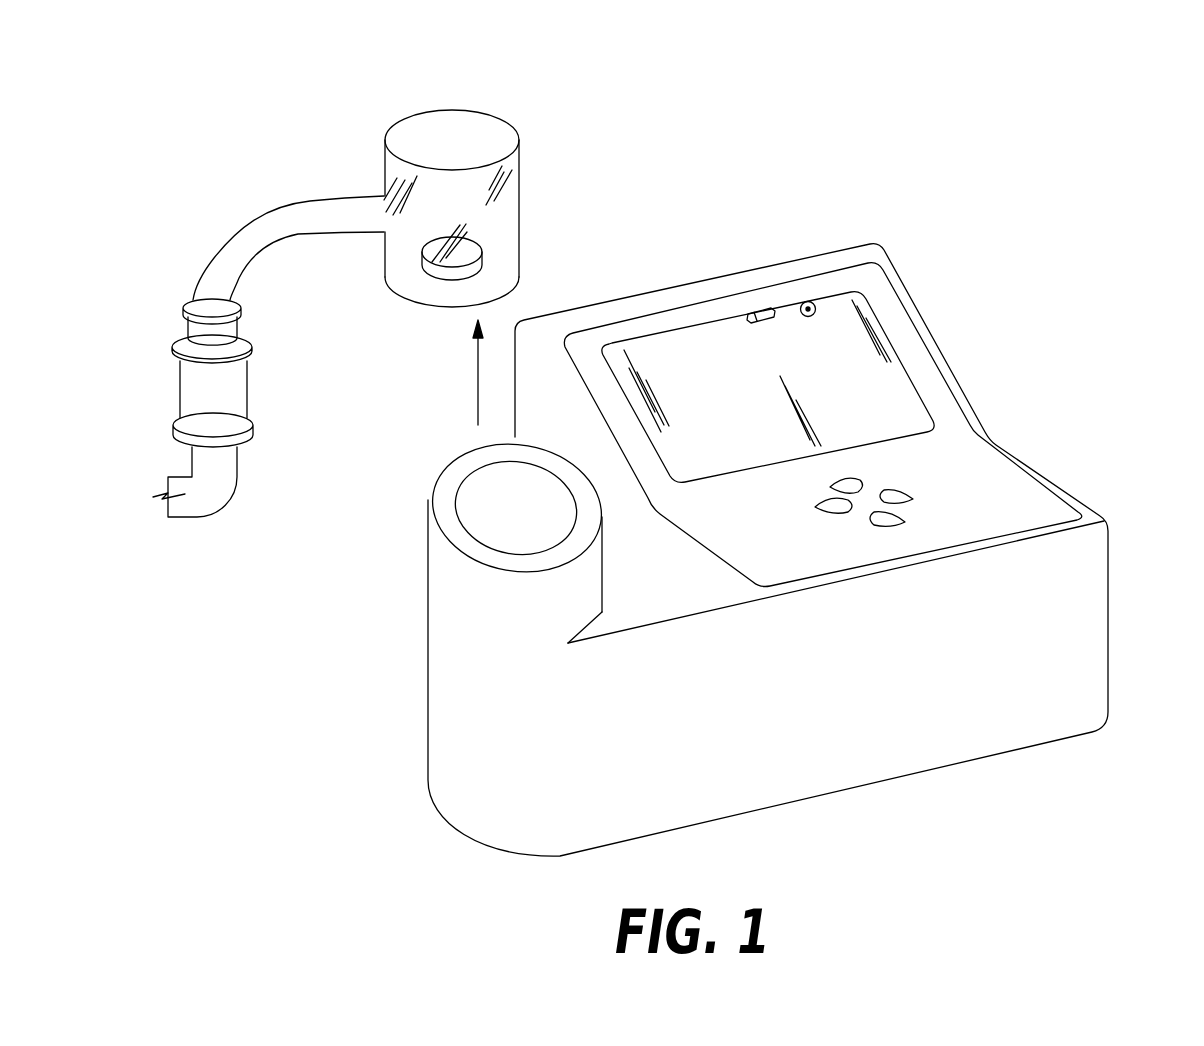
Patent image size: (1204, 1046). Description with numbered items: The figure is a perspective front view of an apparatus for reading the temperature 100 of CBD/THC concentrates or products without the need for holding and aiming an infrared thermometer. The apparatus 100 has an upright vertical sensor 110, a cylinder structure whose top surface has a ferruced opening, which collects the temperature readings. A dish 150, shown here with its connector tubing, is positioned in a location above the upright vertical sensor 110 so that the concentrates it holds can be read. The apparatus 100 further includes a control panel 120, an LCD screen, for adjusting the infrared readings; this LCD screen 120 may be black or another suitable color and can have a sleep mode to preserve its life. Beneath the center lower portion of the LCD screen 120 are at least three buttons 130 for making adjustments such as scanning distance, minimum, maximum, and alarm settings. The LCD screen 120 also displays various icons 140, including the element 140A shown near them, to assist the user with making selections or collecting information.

The apparatus for reading the temperature 100 is at (980, 168).
The upright vertical sensor 110 is at (432, 513).
The control panel 120 is at (895, 377).
The buttons 130 is at (913, 510).
The icons 140 is at (740, 320).
The camera 140A is at (813, 303).
The dish 150 is at (413, 117).